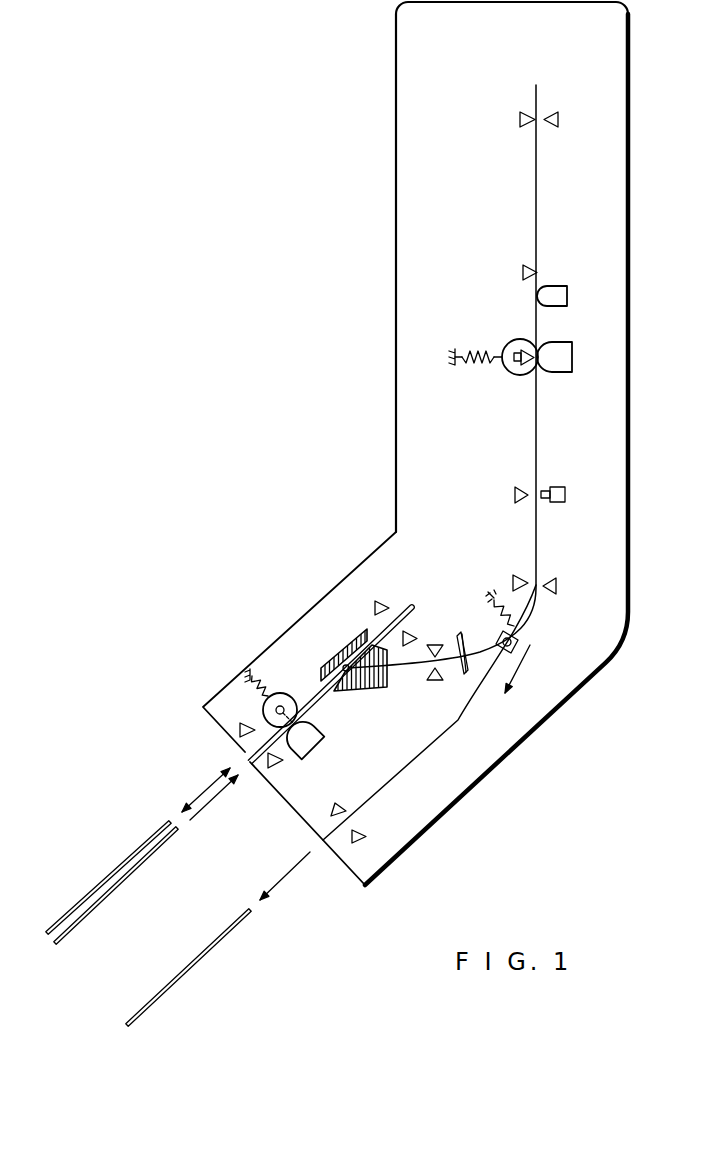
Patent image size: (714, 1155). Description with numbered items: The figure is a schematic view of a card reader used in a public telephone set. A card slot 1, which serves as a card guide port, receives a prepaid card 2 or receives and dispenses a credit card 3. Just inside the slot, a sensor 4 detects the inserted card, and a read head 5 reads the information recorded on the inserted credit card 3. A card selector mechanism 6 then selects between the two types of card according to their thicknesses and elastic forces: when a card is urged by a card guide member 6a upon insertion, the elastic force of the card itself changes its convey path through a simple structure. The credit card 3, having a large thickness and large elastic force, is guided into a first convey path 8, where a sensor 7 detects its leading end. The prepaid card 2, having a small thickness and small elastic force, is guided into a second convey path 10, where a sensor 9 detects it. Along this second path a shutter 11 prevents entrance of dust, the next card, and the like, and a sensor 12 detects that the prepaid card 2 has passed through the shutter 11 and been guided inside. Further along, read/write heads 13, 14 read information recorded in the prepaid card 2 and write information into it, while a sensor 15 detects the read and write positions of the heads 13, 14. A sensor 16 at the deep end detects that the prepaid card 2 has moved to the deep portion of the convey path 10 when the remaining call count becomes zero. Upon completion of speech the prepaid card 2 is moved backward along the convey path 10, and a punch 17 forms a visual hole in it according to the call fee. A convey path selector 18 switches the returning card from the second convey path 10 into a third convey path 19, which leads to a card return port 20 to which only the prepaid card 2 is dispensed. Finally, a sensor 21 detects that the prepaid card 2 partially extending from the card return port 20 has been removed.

The card slot 1 is at (242, 760).
The prepaid card 2 is at (170, 838).
The credit card 3 is at (160, 829).
The sensor 4 is at (284, 760).
The read head 5 is at (327, 745).
The card selector mechanism 6 is at (351, 650).
The card guide member 6a is at (363, 690).
The sensor 7 is at (383, 600).
The first convey path 8 is at (414, 606).
The sensor 9 is at (436, 682).
The second convey path 10 is at (535, 432).
The shutter 11 is at (464, 630).
The sensor 12 is at (516, 573).
The read/write head 13 is at (573, 360).
The read/write head 14 is at (568, 297).
The sensor 15 is at (522, 268).
The sensor 16 is at (520, 117).
The punch 17 is at (565, 491).
The convey path selector 18 is at (520, 637).
The third convey path 19 is at (412, 755).
The card return port 20 is at (324, 842).
The sensor 21 is at (367, 835).